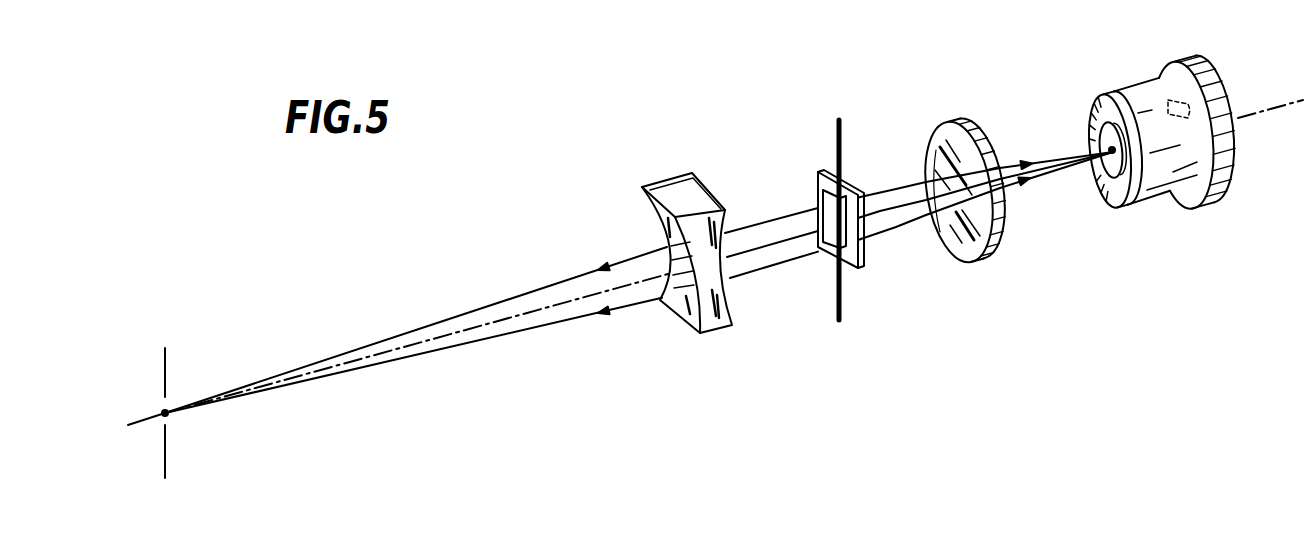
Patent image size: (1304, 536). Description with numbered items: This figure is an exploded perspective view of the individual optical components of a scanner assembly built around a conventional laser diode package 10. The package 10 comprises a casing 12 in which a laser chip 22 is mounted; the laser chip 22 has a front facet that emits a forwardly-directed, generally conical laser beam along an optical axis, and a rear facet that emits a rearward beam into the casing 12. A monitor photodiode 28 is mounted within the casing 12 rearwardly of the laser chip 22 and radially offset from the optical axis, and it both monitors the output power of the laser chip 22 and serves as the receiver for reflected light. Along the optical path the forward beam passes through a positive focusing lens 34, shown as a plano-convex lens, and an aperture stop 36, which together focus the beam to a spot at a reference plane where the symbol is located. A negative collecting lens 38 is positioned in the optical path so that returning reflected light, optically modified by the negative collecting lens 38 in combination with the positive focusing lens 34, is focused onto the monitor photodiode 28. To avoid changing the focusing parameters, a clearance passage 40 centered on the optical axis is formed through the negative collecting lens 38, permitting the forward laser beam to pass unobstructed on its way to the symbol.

The laser diode package 10 is at (1177, 144).
The casing 12 is at (1126, 96).
The laser chip 22 is at (1124, 172).
The monitor photodiode 28 is at (1226, 106).
The positive focusing lens 34 is at (992, 116).
The aperture stop 36 is at (852, 182).
The negative collecting lens 38 is at (700, 200).
The clearance passage 40 is at (689, 308).